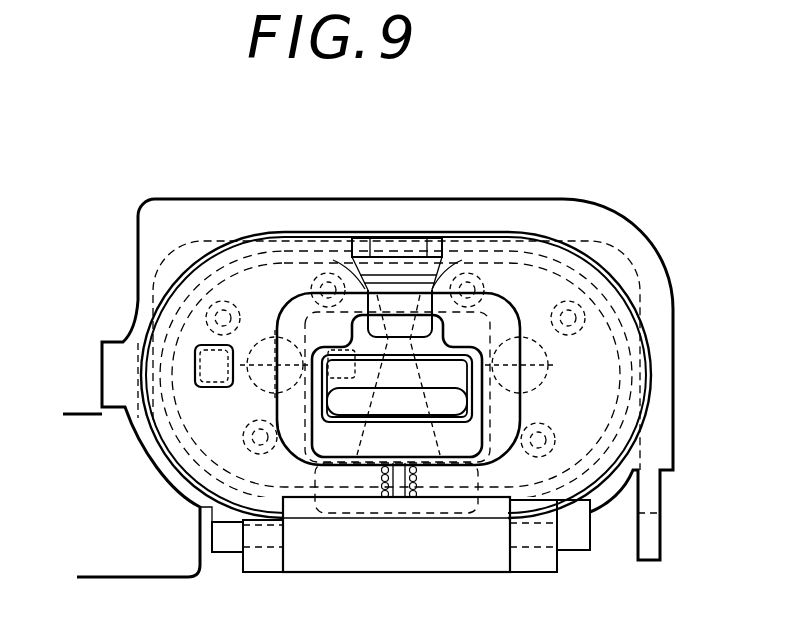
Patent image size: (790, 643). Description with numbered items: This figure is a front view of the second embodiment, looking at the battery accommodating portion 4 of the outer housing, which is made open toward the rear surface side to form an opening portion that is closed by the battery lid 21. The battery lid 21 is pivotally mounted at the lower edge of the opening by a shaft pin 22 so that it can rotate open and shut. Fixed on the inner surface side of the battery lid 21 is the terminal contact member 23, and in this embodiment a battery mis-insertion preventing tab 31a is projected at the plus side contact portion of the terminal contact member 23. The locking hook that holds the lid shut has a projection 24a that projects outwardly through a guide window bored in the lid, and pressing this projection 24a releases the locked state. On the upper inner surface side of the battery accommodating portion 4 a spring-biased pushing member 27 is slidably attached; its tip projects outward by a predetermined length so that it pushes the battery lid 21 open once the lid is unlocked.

The battery accommodating portion 4 is at (213, 199).
The battery lid 21 is at (537, 287).
The shaft pin 22 is at (532, 547).
The terminal contact member 23 is at (280, 248).
The projection 24a is at (402, 330).
The pushing member 27 is at (403, 250).
The battery mis-insertion preventing tab 31a is at (207, 362).